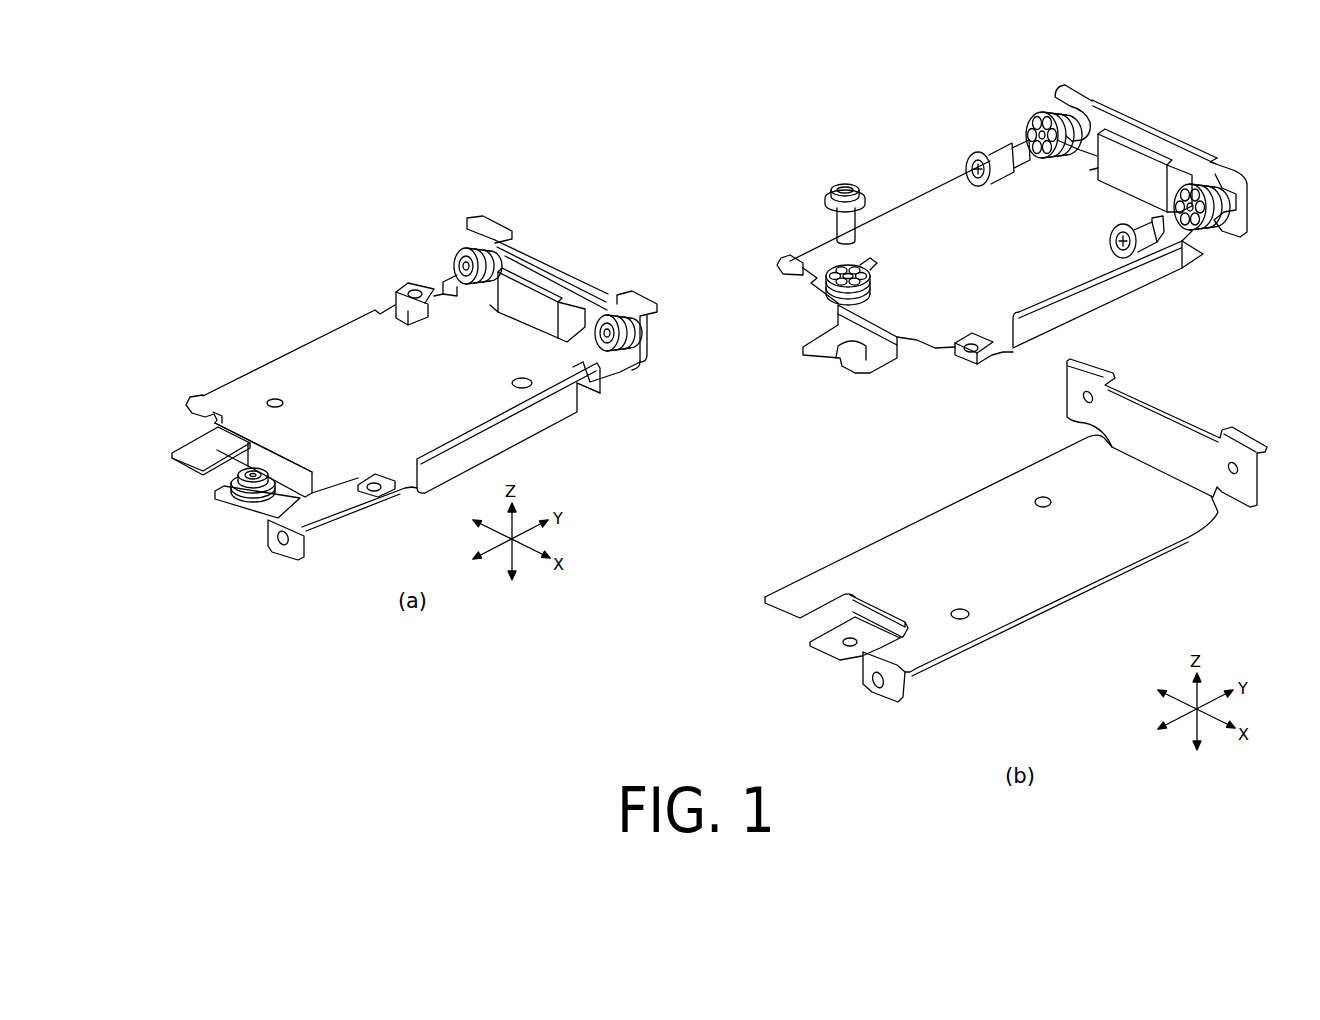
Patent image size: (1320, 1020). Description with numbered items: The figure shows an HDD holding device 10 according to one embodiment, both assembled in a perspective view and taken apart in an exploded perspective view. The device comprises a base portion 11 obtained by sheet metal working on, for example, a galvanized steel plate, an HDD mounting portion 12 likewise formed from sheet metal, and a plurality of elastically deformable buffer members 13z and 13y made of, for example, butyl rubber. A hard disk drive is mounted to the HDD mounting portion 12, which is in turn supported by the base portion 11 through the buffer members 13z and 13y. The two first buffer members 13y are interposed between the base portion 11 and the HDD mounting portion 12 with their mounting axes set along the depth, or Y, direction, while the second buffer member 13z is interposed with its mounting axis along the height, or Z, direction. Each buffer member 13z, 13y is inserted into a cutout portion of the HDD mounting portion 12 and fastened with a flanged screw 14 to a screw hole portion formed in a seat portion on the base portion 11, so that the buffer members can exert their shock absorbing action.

The HDD holding device 10 is at (387, 218).
The base portion 11 is at (337, 507).
The HDD mounting portion 12 is at (303, 360).
The first buffer member 13y is at (458, 233).
The second buffer member 13z is at (238, 502).
The flanged screw 14 is at (827, 187).